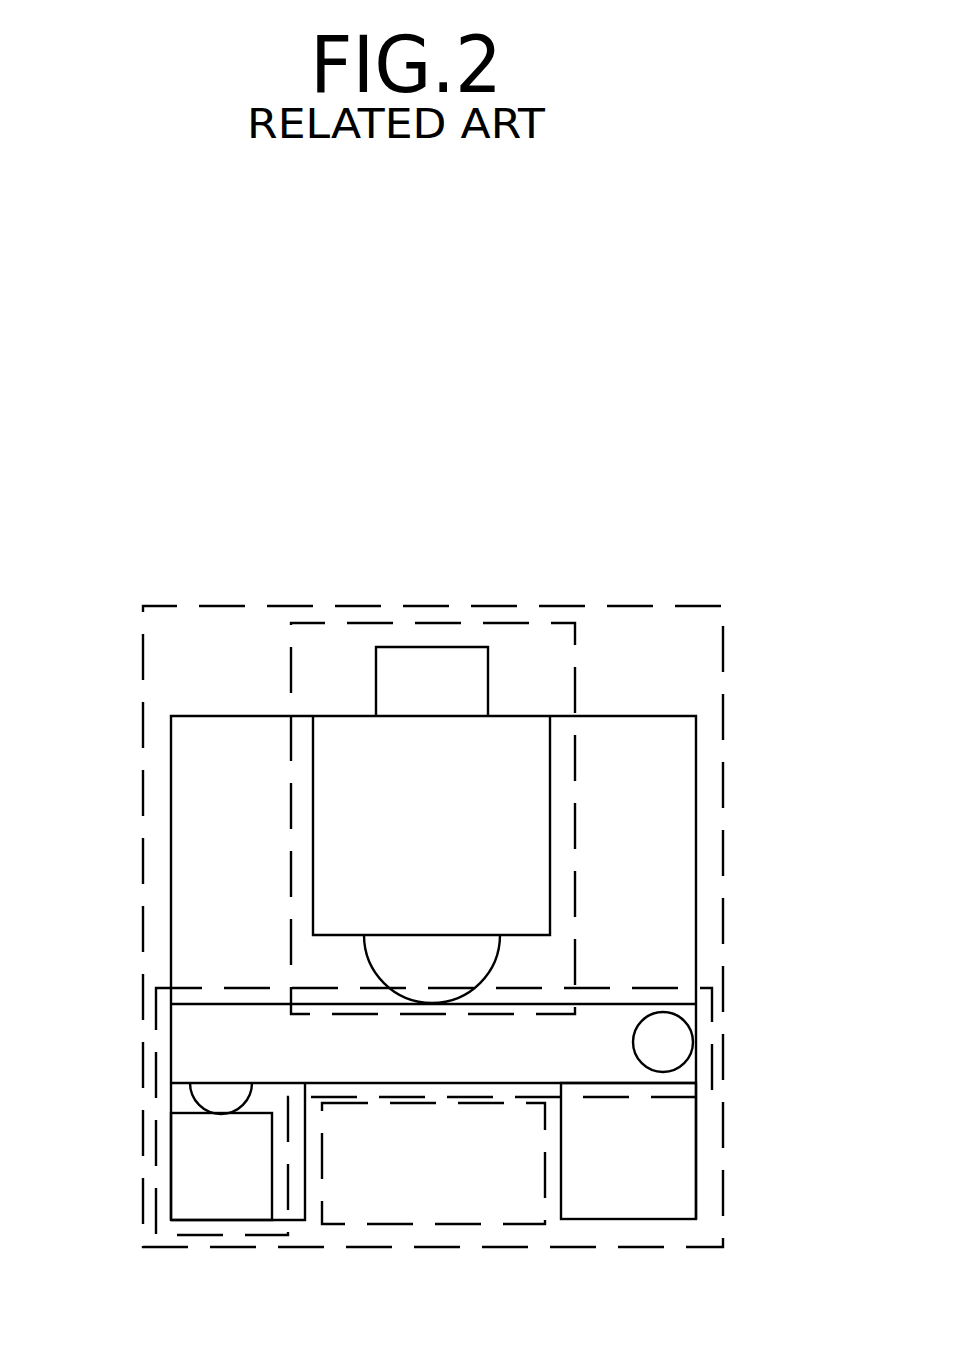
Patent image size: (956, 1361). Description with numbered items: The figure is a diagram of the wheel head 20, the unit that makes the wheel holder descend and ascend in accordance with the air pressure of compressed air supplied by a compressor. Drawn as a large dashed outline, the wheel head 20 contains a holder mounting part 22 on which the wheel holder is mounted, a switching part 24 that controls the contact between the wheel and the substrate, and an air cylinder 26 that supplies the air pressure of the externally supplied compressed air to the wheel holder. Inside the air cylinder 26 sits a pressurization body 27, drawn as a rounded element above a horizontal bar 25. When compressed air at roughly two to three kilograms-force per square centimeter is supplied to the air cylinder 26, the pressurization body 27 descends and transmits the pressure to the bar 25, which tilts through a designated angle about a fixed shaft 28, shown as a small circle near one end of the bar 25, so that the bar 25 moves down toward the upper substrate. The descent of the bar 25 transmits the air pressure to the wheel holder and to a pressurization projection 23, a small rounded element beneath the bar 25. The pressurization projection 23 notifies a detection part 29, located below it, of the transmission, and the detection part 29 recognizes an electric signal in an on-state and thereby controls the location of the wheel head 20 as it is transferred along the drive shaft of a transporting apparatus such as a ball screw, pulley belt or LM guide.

The wheel head 20 is at (723, 700).
The holder mounting part 22 is at (495, 1224).
The pressurization projection 23 is at (200, 1095).
The switching part 24 is at (712, 1041).
The bar 25 is at (180, 1047).
The air cylinder 26 is at (528, 622).
The pressurization body 27 is at (377, 965).
The fixed shaft 28 is at (685, 1057).
The detection part 29 is at (180, 1170).